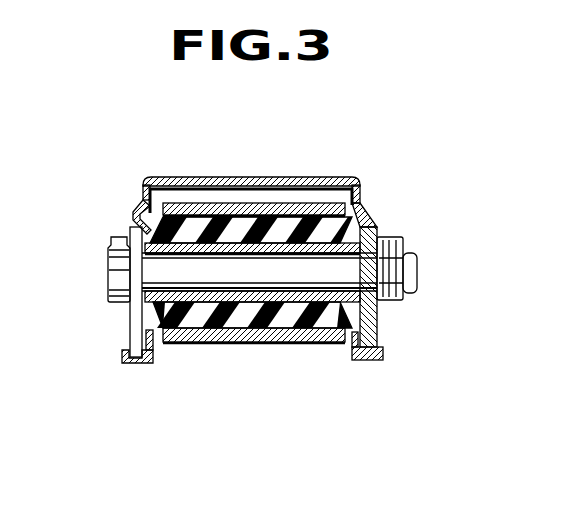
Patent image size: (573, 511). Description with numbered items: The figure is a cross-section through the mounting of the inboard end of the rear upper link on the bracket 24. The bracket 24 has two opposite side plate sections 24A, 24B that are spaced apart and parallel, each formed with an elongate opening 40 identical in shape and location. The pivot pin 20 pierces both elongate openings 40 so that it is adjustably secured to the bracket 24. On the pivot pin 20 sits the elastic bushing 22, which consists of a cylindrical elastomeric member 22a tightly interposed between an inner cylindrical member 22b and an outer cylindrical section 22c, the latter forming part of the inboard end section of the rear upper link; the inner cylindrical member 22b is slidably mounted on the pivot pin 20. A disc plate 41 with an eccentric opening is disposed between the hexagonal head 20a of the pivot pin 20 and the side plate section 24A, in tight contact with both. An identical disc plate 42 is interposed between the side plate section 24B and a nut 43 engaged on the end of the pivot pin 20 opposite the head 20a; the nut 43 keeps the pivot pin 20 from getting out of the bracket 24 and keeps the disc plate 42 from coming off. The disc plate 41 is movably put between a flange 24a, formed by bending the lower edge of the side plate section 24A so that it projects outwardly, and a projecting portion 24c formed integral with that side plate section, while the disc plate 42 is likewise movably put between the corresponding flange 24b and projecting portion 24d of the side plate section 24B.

The pivot pin 20 is at (242, 285).
The hexagonal head 20a is at (115, 306).
The elastic bushing 22 is at (313, 340).
The cylindrical elastomeric member 22a is at (306, 220).
The inner cylindrical member 22b is at (283, 340).
The outer cylindrical section 22c is at (202, 207).
The bracket 24 is at (253, 177).
The side plate section 24A is at (143, 193).
The side plate section 24B is at (362, 199).
The flange 24a is at (138, 363).
The flange 24b is at (384, 355).
The projecting portion 24c is at (132, 214).
The projecting portion 24d is at (374, 209).
The elongate opening 40 is at (150, 341).
The disc plate 41 is at (128, 340).
The disc plate 42 is at (378, 327).
The nut 43 is at (402, 240).